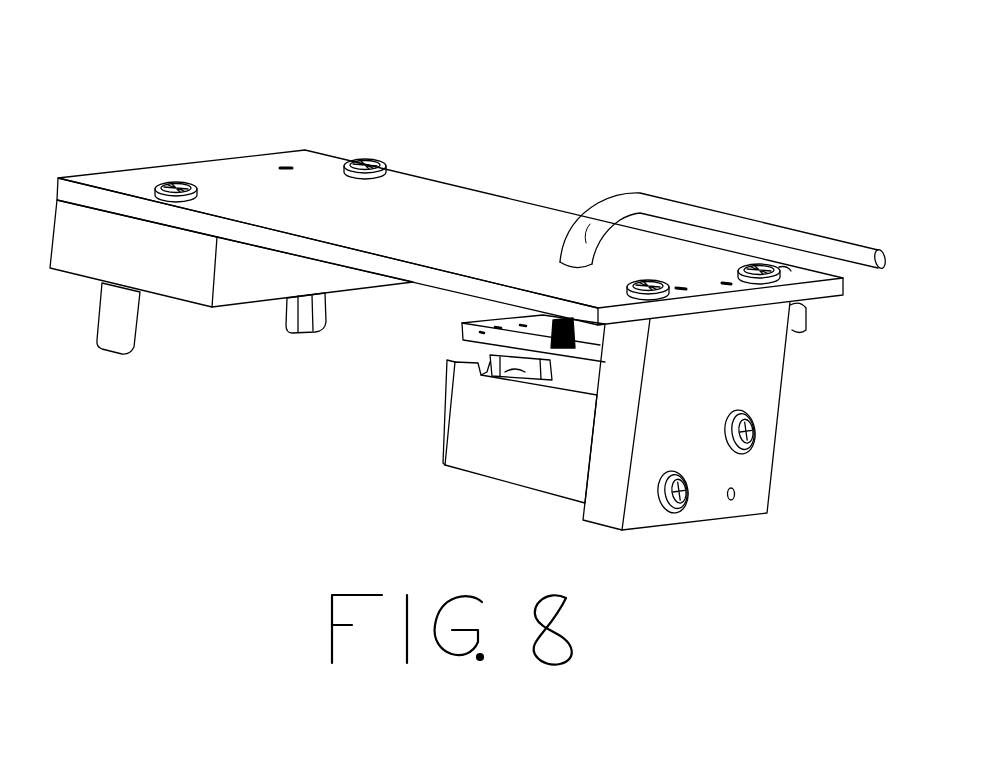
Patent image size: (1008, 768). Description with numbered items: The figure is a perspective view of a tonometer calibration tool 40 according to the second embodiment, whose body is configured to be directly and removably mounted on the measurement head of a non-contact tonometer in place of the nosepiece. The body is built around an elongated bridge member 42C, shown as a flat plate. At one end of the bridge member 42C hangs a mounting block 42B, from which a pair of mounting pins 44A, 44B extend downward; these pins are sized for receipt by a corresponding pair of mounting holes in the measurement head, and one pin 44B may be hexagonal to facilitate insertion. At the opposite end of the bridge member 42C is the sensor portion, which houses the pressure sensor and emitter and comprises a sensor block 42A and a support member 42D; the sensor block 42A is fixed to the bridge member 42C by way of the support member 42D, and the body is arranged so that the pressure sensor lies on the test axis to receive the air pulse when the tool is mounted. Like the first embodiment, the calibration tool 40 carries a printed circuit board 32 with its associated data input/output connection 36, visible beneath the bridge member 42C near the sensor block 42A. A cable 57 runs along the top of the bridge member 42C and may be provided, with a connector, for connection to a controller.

The tonometer calibration tool 40 is at (437, 100).
The bridge member 42C is at (461, 197).
The cable 57 is at (682, 200).
The mounting block 42B is at (150, 268).
The mounting pin 44A is at (113, 352).
The mounting pin 44B is at (299, 334).
The printed circuit board 32 is at (483, 328).
The data input/output connection 36 is at (550, 317).
The sensor block 42A is at (502, 462).
The support member 42D is at (745, 388).